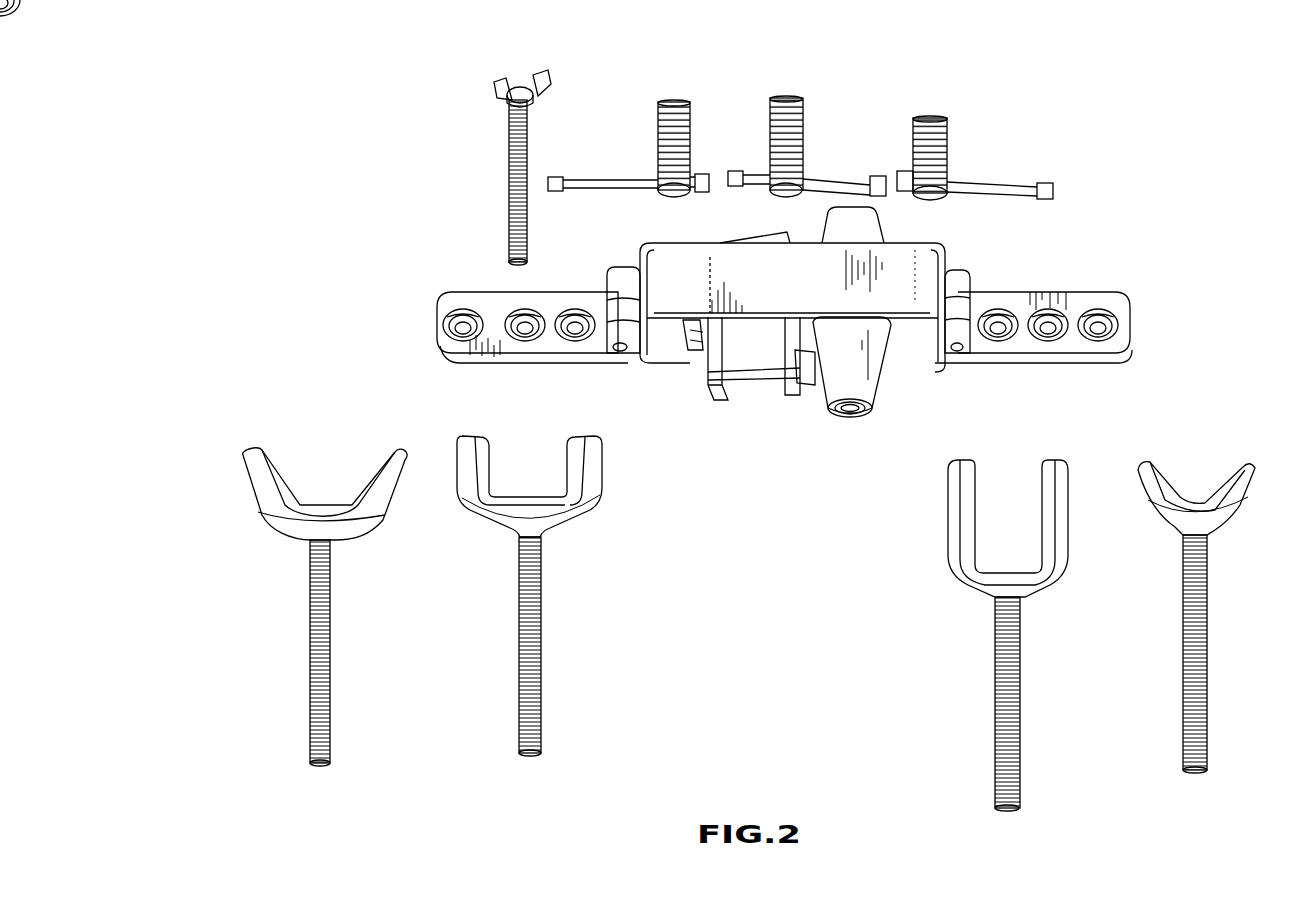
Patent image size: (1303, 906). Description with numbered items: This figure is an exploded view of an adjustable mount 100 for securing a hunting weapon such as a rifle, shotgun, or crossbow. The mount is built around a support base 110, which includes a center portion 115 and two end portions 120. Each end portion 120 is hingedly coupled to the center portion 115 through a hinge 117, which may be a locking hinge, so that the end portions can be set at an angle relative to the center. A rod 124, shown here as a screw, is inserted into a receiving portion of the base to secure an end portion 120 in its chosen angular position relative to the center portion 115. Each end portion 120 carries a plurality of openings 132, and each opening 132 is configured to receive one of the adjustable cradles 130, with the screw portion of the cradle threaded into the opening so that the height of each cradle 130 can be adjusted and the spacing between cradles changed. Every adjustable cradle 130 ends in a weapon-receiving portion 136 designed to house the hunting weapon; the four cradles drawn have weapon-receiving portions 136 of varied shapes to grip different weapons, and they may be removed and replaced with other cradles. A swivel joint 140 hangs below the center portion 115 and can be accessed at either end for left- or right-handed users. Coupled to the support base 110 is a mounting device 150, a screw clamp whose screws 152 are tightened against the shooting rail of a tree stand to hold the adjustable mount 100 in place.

The adjustable mount 100 is at (802, 32).
The support base 110 is at (945, 243).
The center portion 115 is at (675, 243).
The hinge 117 is at (618, 270).
The end portion 120 is at (487, 292).
The rod 124 is at (500, 82).
The adjustable cradle 130 is at (306, 620).
The opening 132 is at (460, 326).
The weapon-receiving portion 136 is at (262, 462).
The swivel joint 140 is at (890, 360).
The mounting device 150 is at (703, 370).
The screw 152 is at (680, 100).